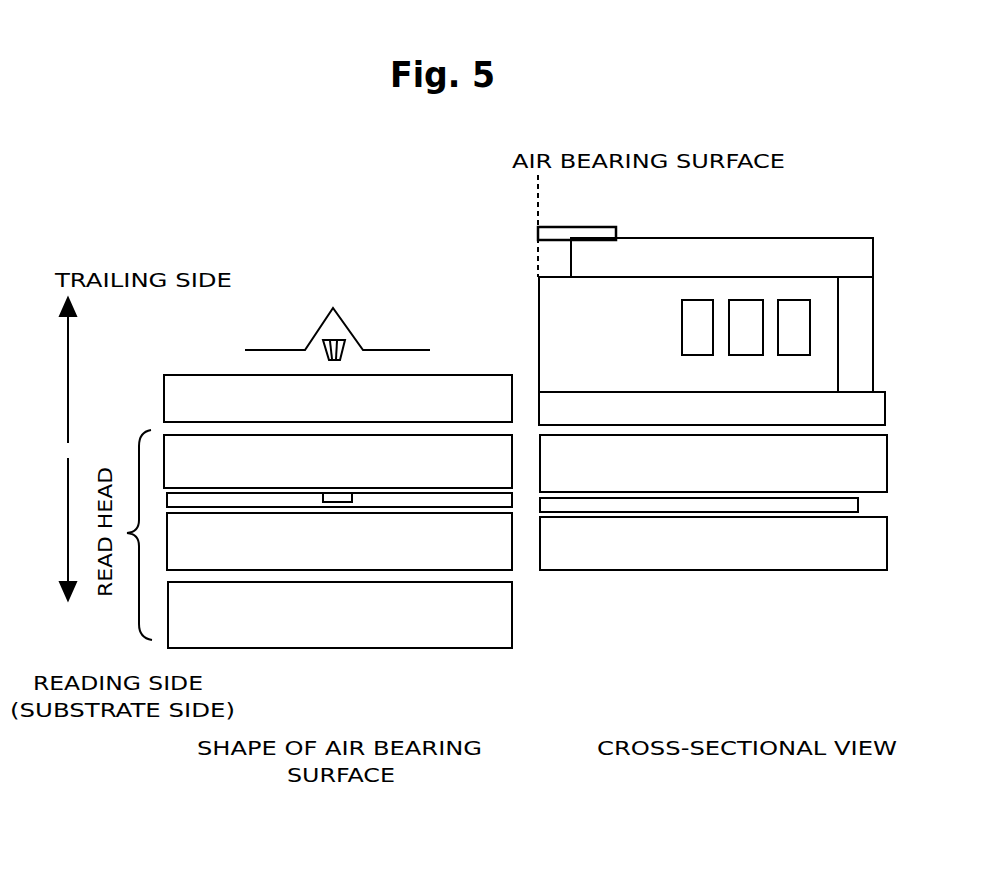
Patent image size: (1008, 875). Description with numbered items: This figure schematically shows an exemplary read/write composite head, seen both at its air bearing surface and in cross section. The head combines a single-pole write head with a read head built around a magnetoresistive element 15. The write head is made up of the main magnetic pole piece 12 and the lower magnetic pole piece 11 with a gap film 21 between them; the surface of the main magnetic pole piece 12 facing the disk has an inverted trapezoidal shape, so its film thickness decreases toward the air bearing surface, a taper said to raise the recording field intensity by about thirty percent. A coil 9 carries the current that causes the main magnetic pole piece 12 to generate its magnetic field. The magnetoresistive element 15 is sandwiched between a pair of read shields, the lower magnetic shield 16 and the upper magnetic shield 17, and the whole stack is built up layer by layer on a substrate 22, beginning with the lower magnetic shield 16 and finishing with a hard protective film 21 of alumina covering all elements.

The coil 9 is at (690, 321).
The lower magnetic pole piece 11 is at (166, 396).
The main magnetic pole piece 12 is at (348, 344).
The magnetoresistive element 15 is at (343, 490).
The lower magnetic shield 16 is at (363, 537).
The upper magnetic shield 17 is at (427, 450).
The gap film 21 is at (391, 358).
The substrate 22 is at (438, 633).